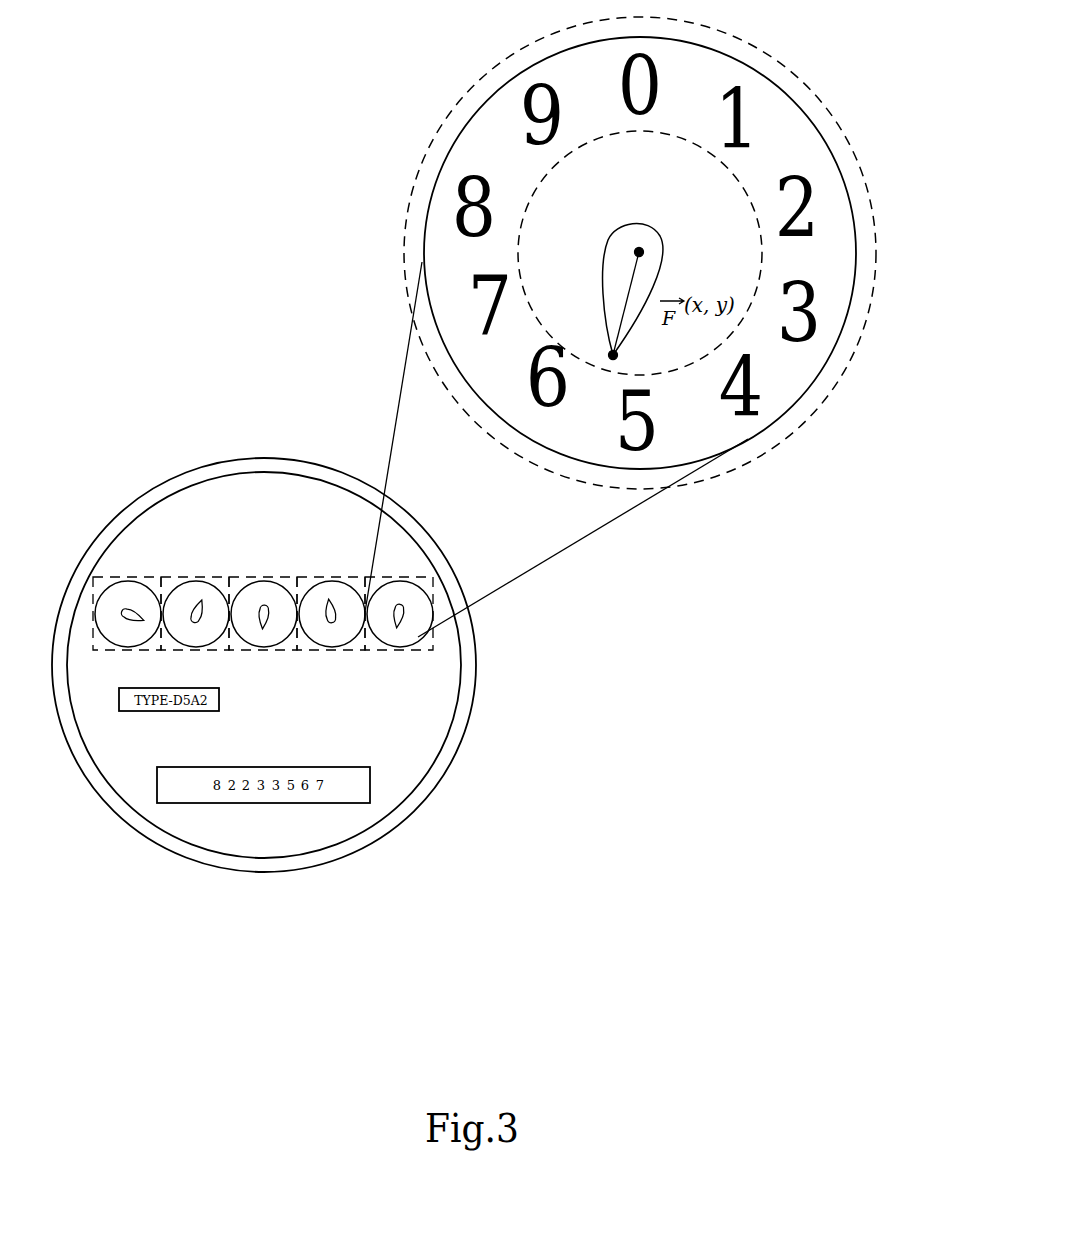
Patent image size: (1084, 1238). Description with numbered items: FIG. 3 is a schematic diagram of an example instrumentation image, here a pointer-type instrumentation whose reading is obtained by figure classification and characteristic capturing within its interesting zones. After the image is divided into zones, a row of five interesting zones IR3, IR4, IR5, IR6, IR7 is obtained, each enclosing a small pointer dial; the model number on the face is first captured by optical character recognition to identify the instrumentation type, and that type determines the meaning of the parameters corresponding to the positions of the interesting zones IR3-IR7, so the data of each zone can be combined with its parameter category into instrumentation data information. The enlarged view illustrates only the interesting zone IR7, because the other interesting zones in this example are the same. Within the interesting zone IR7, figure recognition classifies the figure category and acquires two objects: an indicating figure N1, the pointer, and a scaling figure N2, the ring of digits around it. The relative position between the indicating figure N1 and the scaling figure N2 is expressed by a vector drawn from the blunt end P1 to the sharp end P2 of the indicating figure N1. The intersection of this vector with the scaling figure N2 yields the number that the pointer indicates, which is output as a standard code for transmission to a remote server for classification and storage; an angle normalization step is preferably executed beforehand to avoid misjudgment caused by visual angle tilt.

The indicating figure N1 is at (605, 260).
The scaling figure N2 is at (478, 81).
The blunt end P1 is at (639, 252).
The sharp end P2 is at (615, 358).
The interesting zone IR3 is at (133, 577).
The interesting zone IR4 is at (196, 577).
The interesting zone IR5 is at (270, 577).
The interesting zone IR6 is at (333, 577).
The interesting zone IR7 is at (393, 577).